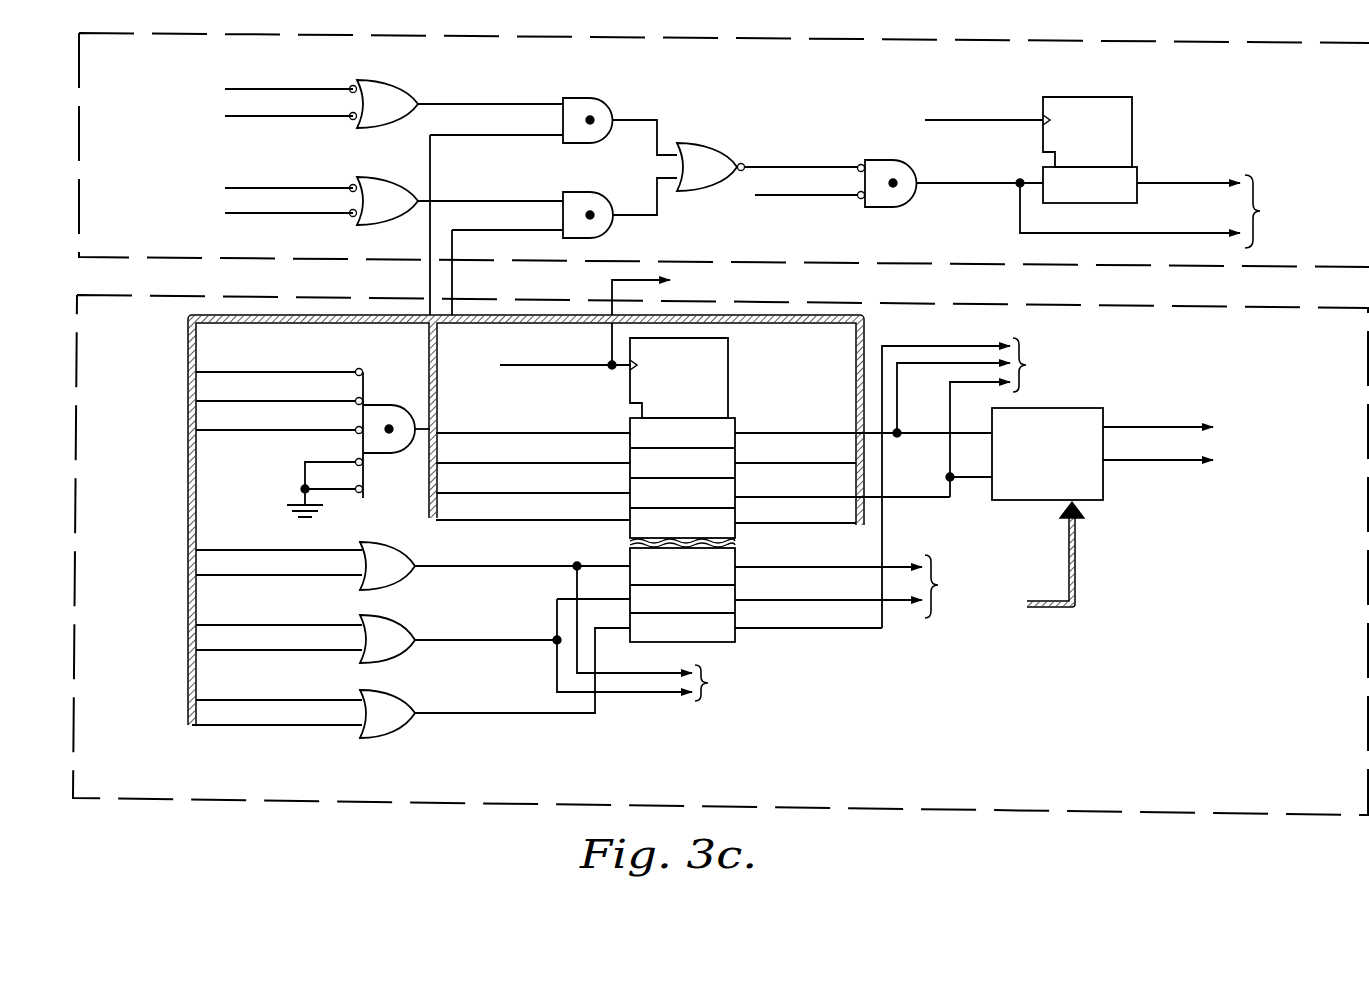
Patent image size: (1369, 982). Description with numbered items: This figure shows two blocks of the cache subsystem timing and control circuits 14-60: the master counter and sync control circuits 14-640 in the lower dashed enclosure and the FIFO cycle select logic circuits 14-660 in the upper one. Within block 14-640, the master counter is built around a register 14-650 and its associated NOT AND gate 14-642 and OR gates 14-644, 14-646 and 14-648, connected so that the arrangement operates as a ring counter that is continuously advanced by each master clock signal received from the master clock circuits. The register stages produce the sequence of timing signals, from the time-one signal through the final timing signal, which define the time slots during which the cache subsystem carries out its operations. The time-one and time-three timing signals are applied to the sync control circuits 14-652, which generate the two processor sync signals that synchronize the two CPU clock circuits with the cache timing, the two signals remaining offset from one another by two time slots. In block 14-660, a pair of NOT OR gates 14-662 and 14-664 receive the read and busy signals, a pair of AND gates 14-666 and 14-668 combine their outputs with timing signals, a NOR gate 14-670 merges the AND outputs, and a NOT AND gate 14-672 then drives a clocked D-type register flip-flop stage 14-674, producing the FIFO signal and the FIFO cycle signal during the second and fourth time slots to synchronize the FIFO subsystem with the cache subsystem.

The timing and control circuits 14-60 is at (721, 424).
The FIFO cycle select logic circuits 14-660 is at (863, 91).
The NOT OR gate 14-662 is at (377, 80).
The NOT OR gate 14-664 is at (386, 177).
The AND gate 14-666 is at (597, 98).
The AND gate 14-668 is at (586, 192).
The NOR gate 14-670 is at (695, 143).
The NOT AND gate (NAND) 14-672 is at (899, 207).
The clocked D-type register flip-flop stage 14-674 is at (1072, 97).
The master counter and sync control circuits 14-640 is at (1283, 756).
The NOT AND gate 14-642 is at (384, 405).
The OR gate 14-644 is at (412, 578).
The OR gate 14-646 is at (412, 652).
The OR gate 14-648 is at (412, 728).
The register 14-650 is at (728, 378).
The sync control circuits 14-652 is at (1103, 488).